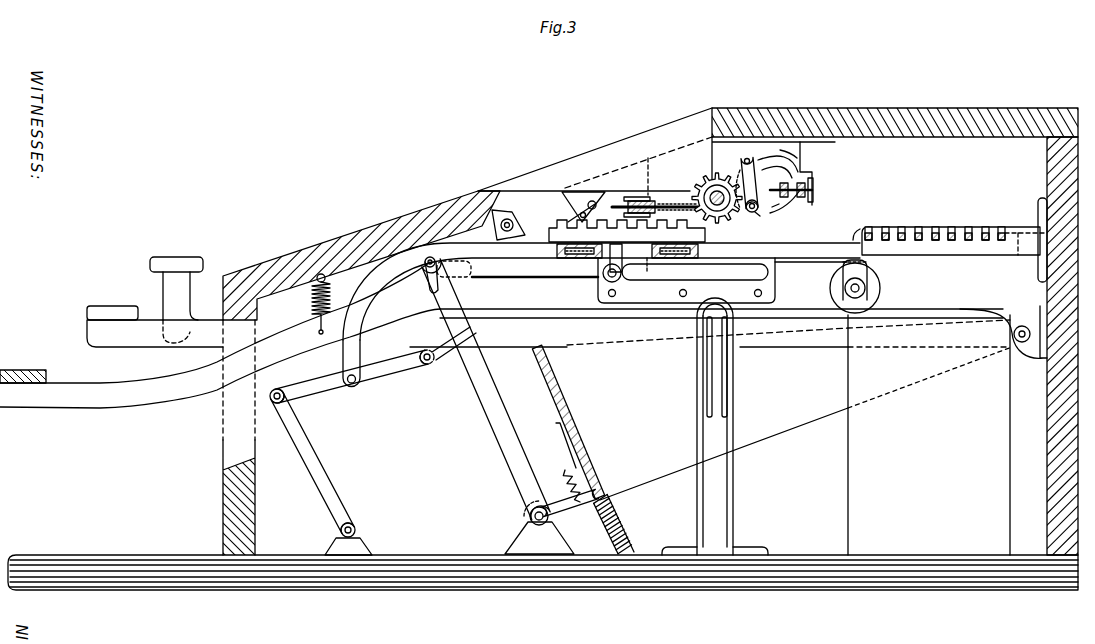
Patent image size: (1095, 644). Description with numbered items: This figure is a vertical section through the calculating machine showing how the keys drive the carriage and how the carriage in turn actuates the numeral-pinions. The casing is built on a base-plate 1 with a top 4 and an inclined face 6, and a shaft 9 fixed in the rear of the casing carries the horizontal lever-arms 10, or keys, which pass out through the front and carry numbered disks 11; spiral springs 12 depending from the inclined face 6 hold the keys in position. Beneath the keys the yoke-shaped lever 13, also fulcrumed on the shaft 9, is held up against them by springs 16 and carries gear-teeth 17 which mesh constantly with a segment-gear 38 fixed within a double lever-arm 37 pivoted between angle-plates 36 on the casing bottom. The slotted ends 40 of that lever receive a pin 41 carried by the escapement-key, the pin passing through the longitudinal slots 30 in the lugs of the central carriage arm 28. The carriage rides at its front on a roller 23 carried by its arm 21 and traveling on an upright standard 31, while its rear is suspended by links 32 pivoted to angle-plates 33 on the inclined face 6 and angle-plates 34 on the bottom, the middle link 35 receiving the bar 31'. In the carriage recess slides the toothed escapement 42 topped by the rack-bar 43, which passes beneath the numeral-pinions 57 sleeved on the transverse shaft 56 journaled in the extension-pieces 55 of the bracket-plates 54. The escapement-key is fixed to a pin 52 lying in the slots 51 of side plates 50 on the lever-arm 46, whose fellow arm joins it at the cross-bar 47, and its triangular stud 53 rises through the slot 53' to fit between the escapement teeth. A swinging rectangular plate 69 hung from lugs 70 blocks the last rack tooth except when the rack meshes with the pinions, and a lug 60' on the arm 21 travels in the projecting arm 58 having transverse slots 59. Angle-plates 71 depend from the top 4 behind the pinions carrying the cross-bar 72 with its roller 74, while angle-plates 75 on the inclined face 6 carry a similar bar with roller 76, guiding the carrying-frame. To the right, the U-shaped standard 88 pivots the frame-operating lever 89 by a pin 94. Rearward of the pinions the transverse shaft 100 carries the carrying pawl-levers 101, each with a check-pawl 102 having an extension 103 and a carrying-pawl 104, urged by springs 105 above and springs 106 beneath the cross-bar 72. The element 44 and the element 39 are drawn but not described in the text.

The base-plate 1 is at (626, 590).
The top 4 is at (922, 108).
The inclined face 6 is at (333, 238).
The shaft 9 is at (1023, 343).
The horizontal lever-arms 10 is at (710, 328).
The disks 11 is at (100, 310).
The spiral springs 12 is at (313, 297).
The yoke-shaped lever 13 is at (582, 445).
The springs 16 is at (627, 520).
The gear-teeth 17 is at (563, 471).
The arm 21 is at (803, 250).
The roller 23 is at (871, 284).
The arm 28 is at (601, 291).
The longitudinal slots 30 is at (468, 277).
The upright standard 31 is at (806, 435).
The bar 31' is at (339, 363).
The links 32 is at (375, 366).
The angle-plates 33 is at (492, 228).
The angle-plates 34 is at (358, 532).
The middle link 35 is at (336, 392).
The angle-plates 36 is at (539, 538).
The double lever-arm 37 is at (487, 388).
The segment-gear 38 is at (569, 502).
The pivot 39 is at (528, 516).
The slots 40 is at (427, 286).
The pin 41 is at (425, 266).
The escapement 42 is at (646, 250).
The rack-bar 43 is at (706, 236).
The bar 44 is at (548, 278).
The lever-arm 46 is at (126, 408).
The cross-bar 47 is at (32, 370).
The side plates 50 is at (686, 280).
The longitudinal slots 51 is at (695, 270).
The pin 52 is at (621, 279).
The stud 53 is at (625, 249).
The slot 53' is at (665, 277).
The bracket-plates 54 is at (585, 152).
The extension-pieces 55 is at (748, 213).
The transverse shaft 56 is at (698, 178).
The numeral-pinions 57 is at (703, 186).
The projecting arm 58 is at (1024, 228).
The transverse slots 59 is at (906, 228).
The lug 60' is at (869, 221).
The rectangular plate 69 is at (576, 207).
The lugs 70 is at (584, 202).
The angle-plates 71 is at (808, 173).
The cross-bar 72 is at (804, 188).
The roller 74 is at (807, 191).
The angle-plates 75 is at (646, 181).
The roller 76 is at (650, 208).
The U-shaped standard 88 is at (738, 492).
The frame-operating lever 89 is at (732, 394).
The pin 94 is at (698, 329).
The transverse shaft 100 is at (760, 216).
The carrying pawl-levers 101 is at (786, 166).
The check-pawl 102 is at (788, 176).
The extension 103 is at (776, 212).
The carrying-pawl 104 is at (741, 156).
The springs 105 is at (762, 148).
The springs 106 is at (803, 205).